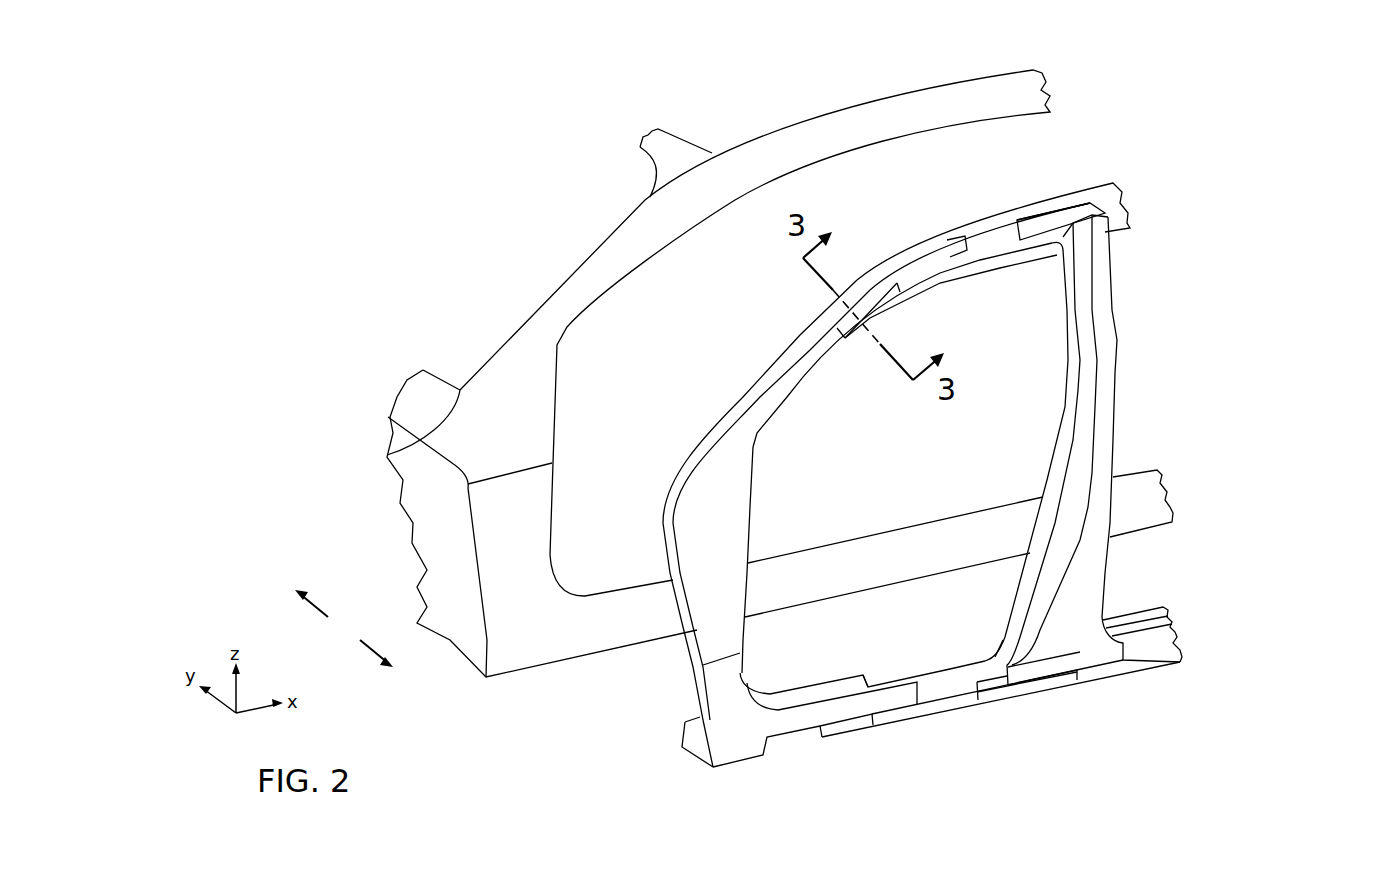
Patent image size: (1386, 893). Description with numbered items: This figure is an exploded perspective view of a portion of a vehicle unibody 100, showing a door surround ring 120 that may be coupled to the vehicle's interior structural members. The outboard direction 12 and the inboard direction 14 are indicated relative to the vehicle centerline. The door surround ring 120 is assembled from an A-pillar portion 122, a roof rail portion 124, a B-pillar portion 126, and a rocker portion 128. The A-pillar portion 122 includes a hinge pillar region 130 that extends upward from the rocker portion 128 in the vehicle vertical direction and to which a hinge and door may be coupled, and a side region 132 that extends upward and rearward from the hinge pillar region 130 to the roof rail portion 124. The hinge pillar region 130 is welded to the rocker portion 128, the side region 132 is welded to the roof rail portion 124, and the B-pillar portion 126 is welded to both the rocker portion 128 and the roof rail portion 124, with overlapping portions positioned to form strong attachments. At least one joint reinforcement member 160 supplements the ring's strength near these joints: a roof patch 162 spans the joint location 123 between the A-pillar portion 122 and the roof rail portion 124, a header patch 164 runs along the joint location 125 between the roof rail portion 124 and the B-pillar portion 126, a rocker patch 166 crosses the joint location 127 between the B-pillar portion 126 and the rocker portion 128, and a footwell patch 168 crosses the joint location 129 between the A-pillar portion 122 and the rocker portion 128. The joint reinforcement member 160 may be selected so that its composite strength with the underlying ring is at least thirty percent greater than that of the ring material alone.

The unibody 100 is at (427, 108).
The direction 12 is at (363, 650).
The direction 14 is at (322, 607).
The door surround ring 120 is at (1228, 318).
The A-pillar portion 122 is at (765, 505).
The joint location 123 is at (900, 295).
The roof rail portion 124 is at (965, 198).
The joint location 125 is at (1050, 245).
The B-pillar portion 126 is at (1128, 401).
The joint location 127 is at (993, 636).
The rocker portion 128 is at (952, 722).
The joint location 129 is at (863, 683).
The hinge pillar region 130 is at (765, 474).
The side region 132 is at (828, 375).
The joint reinforcement member 160 is at (918, 242).
The roof patch 162 is at (958, 263).
The header patch 164 is at (1074, 213).
The rocker patch 166 is at (978, 680).
The footwell patch 168 is at (895, 690).